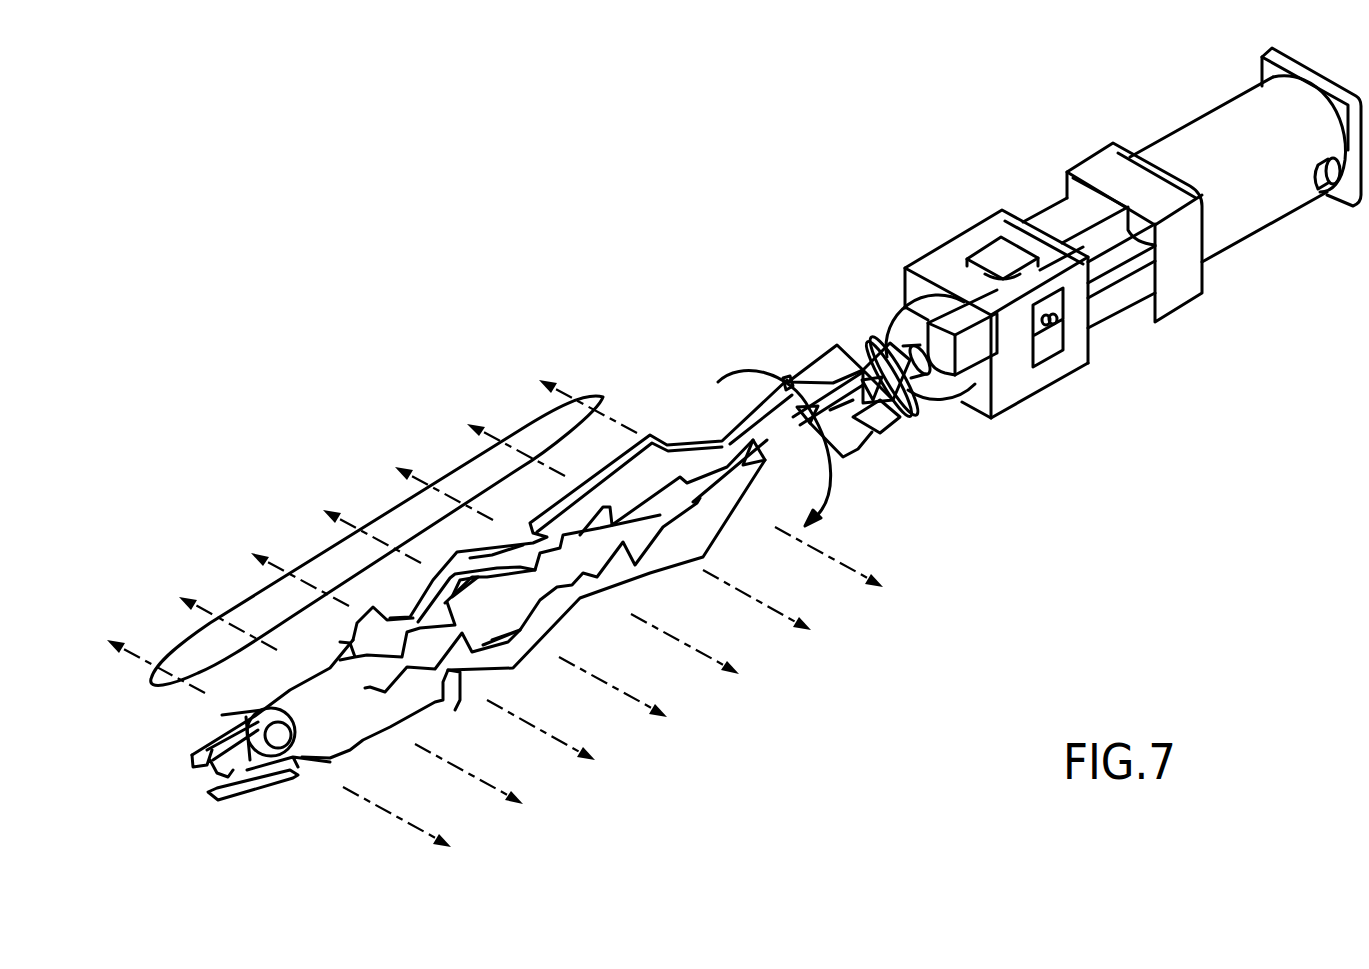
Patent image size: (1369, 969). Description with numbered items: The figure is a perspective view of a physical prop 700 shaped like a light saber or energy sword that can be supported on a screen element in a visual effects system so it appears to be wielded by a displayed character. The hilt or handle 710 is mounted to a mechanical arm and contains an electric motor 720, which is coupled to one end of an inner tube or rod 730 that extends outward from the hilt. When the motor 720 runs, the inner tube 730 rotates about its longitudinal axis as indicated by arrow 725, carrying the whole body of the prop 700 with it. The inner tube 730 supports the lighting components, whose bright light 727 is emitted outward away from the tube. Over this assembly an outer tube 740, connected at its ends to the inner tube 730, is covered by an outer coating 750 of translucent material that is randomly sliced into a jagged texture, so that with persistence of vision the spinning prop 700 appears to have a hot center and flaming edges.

The prop 700 is at (348, 318).
The hilt or handle 710 is at (1268, 247).
The electric motor 720 is at (955, 420).
The arrow indicating rotation 725 is at (783, 385).
The bright light 727 is at (595, 397).
The inner tube or rod 730 is at (934, 376).
The outer tube 740 is at (792, 480).
The outer coating 750 is at (594, 618).